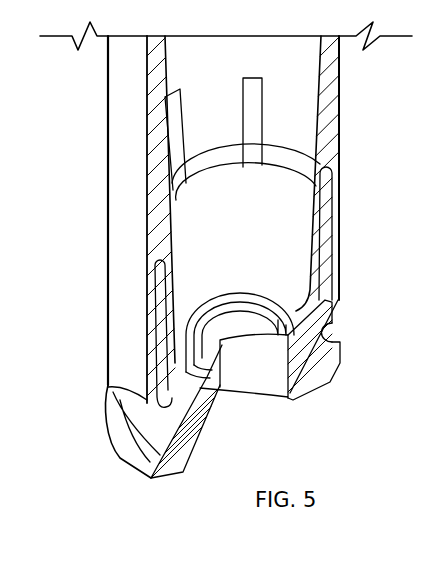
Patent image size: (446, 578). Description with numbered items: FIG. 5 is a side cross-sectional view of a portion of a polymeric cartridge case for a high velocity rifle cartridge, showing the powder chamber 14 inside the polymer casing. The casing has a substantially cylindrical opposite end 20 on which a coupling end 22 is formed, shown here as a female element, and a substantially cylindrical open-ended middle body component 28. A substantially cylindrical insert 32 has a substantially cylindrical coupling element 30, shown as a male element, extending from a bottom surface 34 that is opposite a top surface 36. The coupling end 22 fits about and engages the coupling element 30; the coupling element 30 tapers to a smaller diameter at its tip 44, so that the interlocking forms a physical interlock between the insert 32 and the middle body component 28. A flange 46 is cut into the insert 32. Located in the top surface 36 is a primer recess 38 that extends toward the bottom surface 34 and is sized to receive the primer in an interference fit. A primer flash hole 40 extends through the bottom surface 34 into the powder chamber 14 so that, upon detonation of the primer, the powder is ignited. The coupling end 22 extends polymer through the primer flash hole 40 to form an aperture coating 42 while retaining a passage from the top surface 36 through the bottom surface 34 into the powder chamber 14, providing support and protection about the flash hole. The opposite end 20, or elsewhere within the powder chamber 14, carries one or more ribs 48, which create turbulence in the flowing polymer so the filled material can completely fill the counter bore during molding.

The powder chamber 14 is at (306, 75).
The substantially cylindrical opposite end 20 is at (185, 203).
The coupling end 22 is at (337, 183).
The middle body component 28 is at (107, 299).
The substantially cylindrical coupling element 30 is at (327, 240).
The substantially cylindrical insert 32 is at (136, 467).
The bottom surface 34 is at (318, 329).
The top surface 36 is at (182, 470).
The primer recess 38 is at (273, 382).
The primer flash hole 40 is at (250, 320).
The aperture coating 42 is at (228, 378).
The tip 44 is at (322, 163).
The flange 46 is at (130, 440).
The ribs 48 is at (179, 100).